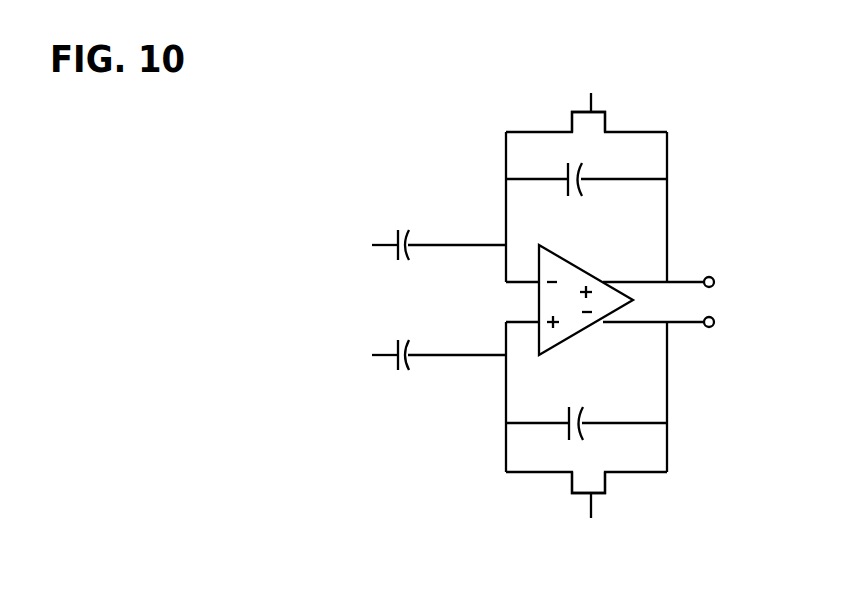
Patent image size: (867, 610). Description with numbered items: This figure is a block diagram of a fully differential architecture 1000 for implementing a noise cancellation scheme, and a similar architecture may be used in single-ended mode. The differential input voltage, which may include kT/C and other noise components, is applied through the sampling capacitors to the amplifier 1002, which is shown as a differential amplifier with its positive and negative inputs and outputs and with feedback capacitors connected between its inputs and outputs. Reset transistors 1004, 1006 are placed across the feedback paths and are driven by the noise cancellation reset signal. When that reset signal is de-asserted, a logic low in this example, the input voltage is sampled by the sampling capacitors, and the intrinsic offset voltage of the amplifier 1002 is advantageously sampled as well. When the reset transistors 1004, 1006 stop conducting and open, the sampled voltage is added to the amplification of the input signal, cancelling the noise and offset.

The fully differential architecture 1000 is at (312, 117).
The differential operational amplifier 1002 is at (575, 334).
The reset transistor 1004 is at (604, 112).
The reset transistor 1006 is at (604, 494).